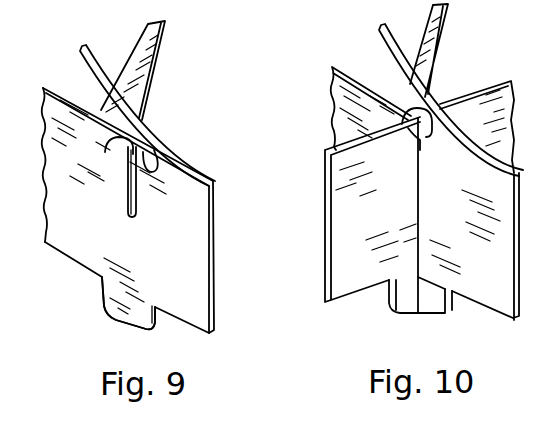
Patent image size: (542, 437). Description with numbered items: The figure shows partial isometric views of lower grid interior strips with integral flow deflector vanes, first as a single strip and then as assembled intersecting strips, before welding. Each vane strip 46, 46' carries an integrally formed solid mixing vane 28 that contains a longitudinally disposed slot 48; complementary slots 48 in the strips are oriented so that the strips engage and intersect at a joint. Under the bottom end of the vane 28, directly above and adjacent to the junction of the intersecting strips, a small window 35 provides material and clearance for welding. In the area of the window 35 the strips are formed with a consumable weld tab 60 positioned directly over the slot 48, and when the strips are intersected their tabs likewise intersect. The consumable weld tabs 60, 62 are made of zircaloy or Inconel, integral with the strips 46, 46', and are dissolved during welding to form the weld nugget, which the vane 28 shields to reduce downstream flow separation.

In FIG. 9, the mixing vane 28 is at (148, 24).
In FIG. 10, the mixing vane 28 is at (439, 13).
In FIG. 9, the window 35 is at (97, 143).
In FIG. 10, the vane strip 46 is at (480, 105).
In FIG. 9, the complementary vane strip 46' is at (154, 210).
In FIG. 10, the complementary vane strip 46' is at (422, 229).
In FIG. 9, the slot 48 is at (137, 191).
In FIG. 9, the consumable weld tab 60 is at (121, 160).
In FIG. 10, the consumable weld tab 60 is at (420, 130).
In FIG. 9, the consumable weld tab 62 is at (112, 292).
In FIG. 10, the consumable weld tab 62 is at (400, 312).